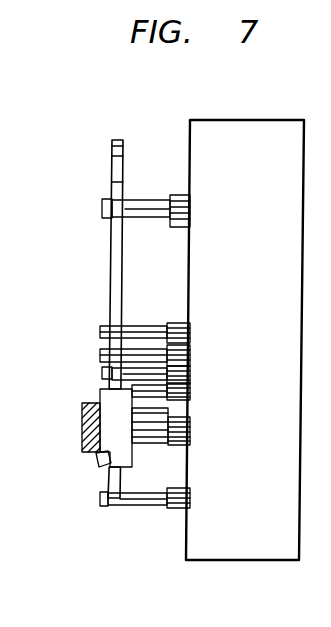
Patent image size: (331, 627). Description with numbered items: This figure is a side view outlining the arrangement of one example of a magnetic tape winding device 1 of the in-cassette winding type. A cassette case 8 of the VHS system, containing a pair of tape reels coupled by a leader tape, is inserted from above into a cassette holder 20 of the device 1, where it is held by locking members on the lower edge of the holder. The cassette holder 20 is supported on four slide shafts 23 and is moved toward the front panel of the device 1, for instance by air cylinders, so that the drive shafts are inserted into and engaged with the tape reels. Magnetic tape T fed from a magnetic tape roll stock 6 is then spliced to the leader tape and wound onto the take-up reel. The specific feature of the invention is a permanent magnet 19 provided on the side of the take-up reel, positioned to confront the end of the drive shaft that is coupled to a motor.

The magnetic tape winding device 1 is at (275, 545).
The magnetic tape roll stock 6 is at (120, 170).
The cassette case 8 is at (107, 466).
The permanent magnet 19 is at (82, 410).
The cassette holder 20 is at (112, 412).
The slide shafts 23 is at (190, 445).
The magnetic tape T is at (113, 480).